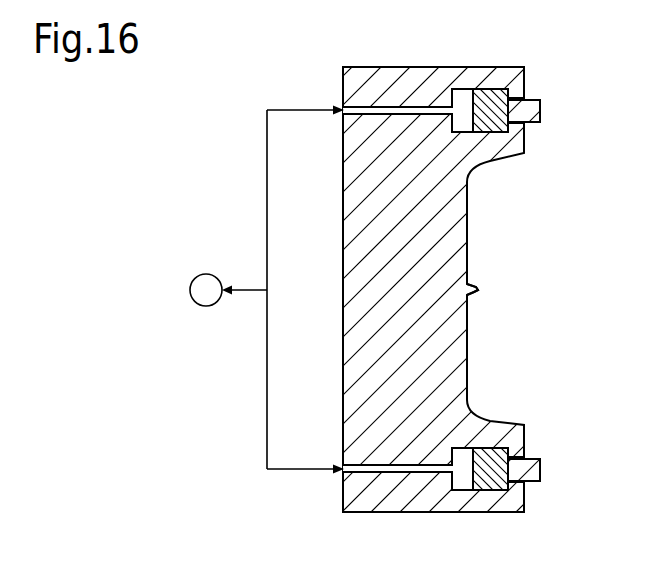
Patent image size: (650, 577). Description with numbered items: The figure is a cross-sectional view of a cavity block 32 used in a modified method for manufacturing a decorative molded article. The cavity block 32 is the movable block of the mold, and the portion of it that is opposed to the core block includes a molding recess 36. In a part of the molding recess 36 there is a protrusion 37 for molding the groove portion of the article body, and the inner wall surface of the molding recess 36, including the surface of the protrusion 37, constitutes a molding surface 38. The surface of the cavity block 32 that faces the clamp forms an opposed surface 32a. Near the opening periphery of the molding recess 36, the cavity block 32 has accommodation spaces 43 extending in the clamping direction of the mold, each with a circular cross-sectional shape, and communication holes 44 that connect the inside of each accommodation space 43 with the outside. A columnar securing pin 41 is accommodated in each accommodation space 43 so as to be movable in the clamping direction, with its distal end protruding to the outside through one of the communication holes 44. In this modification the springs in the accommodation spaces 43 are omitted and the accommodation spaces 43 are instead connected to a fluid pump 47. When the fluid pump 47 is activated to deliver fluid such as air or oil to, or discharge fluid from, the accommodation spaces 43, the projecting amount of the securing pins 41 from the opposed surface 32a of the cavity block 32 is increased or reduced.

The cavity block 32 is at (343, 207).
The opposed surface 32a is at (524, 143).
The molding recess 36 is at (455, 338).
The protrusion 37 is at (478, 289).
The molding surface 38 is at (468, 230).
The securing pin 41 is at (540, 111).
The accommodation space 43 is at (462, 92).
The communication hole 44 is at (528, 104).
The fluid pump 47 is at (190, 290).